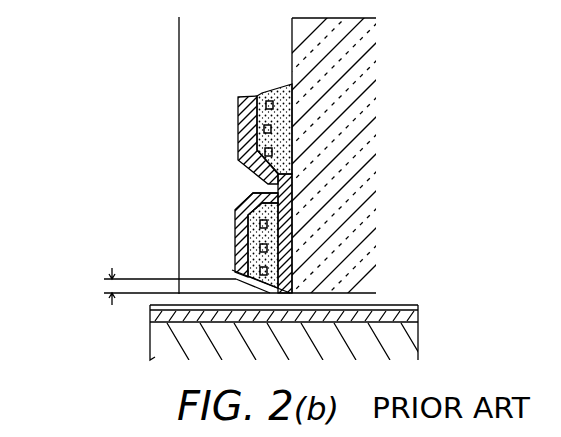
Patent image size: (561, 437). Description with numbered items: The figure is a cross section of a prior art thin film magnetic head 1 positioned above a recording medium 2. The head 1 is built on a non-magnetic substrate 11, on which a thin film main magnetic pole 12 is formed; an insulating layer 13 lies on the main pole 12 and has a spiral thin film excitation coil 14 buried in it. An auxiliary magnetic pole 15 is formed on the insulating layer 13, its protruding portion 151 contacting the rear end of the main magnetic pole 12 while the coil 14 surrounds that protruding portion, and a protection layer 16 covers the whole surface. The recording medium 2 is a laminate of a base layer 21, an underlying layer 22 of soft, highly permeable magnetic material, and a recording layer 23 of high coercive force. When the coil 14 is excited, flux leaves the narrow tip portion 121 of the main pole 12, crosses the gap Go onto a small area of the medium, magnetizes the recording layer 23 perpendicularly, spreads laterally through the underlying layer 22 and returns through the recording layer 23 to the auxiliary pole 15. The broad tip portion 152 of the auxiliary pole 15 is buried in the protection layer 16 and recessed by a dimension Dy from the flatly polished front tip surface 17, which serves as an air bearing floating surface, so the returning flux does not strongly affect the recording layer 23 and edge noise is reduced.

The magnetic head 1 is at (252, 218).
The non-magnetic substrate 11 is at (372, 103).
The main magnetic pole 12 is at (292, 201).
The tip portion 121 is at (235, 271).
The insulating layer 13 is at (256, 237).
The thin film excitation coil 14 is at (268, 127).
The auxiliary magnetic pole 15 is at (245, 163).
The protruding portion 151 is at (267, 190).
The tip portion of the auxiliary magnetic pole 152 is at (235, 238).
The protection layer 16 is at (198, 133).
The front tip surface 17 is at (376, 293).
The recording medium 2 is at (328, 322).
The base layer 21 is at (410, 338).
The underlying layer 22 is at (403, 323).
The recording layer 23 is at (418, 305).
The recess dimension Dy is at (107, 285).
The gap Go is at (150, 303).